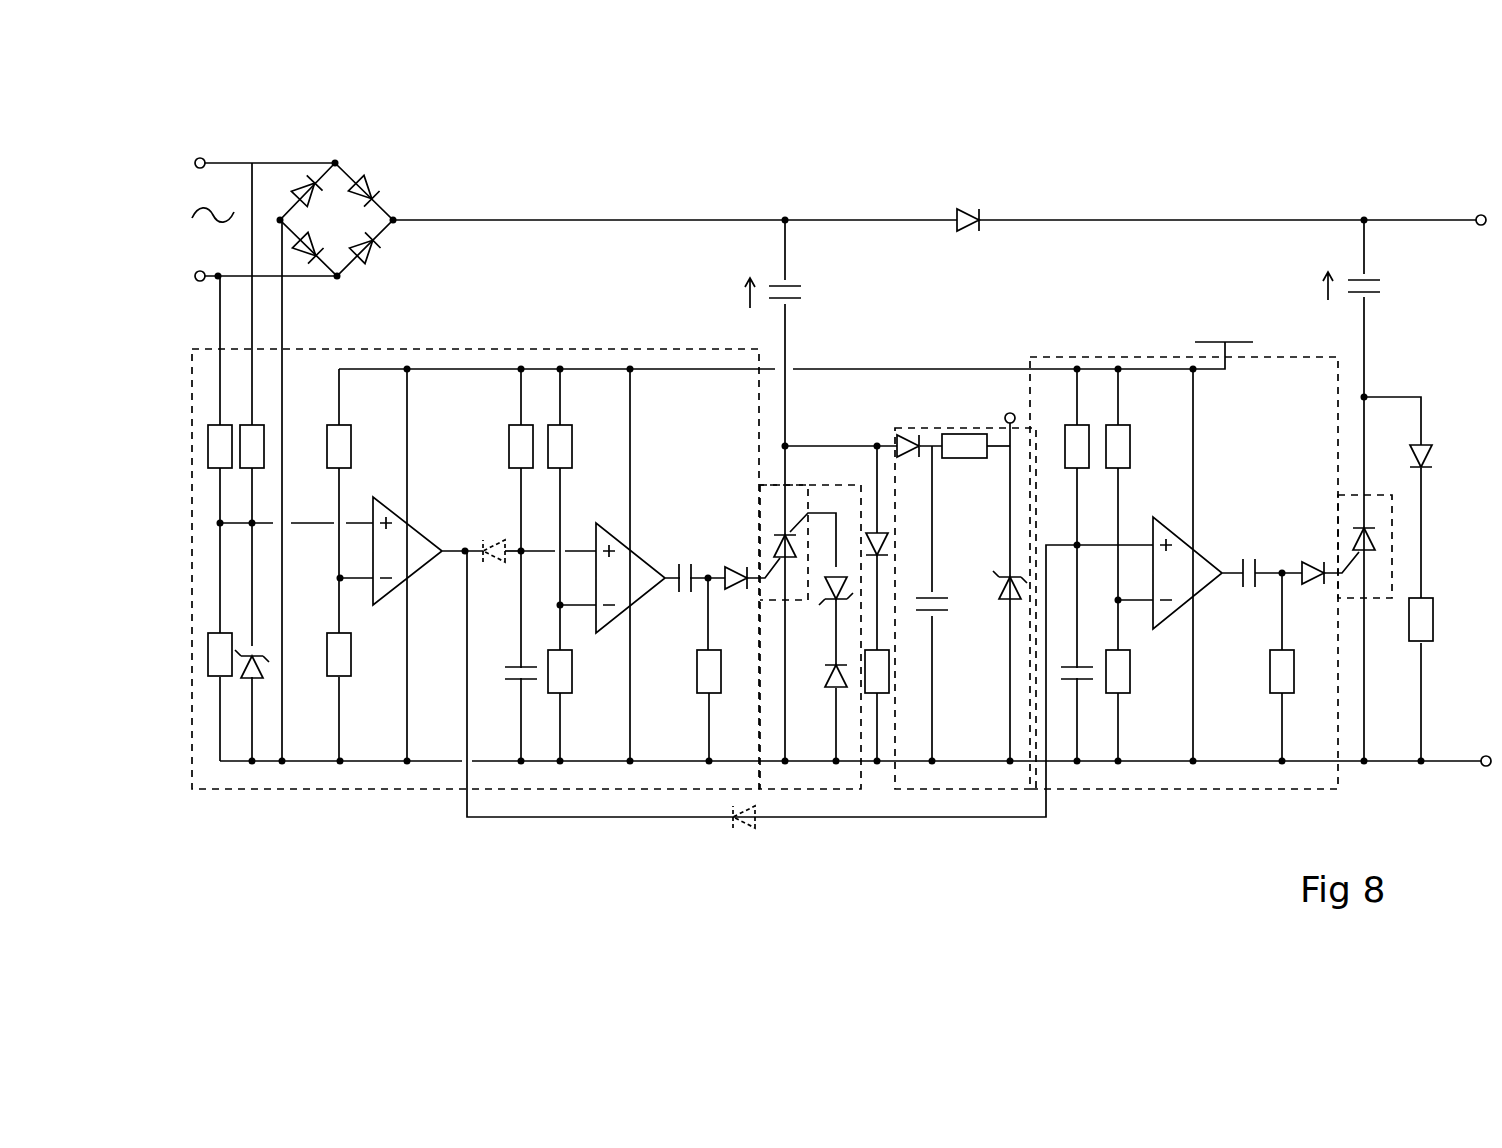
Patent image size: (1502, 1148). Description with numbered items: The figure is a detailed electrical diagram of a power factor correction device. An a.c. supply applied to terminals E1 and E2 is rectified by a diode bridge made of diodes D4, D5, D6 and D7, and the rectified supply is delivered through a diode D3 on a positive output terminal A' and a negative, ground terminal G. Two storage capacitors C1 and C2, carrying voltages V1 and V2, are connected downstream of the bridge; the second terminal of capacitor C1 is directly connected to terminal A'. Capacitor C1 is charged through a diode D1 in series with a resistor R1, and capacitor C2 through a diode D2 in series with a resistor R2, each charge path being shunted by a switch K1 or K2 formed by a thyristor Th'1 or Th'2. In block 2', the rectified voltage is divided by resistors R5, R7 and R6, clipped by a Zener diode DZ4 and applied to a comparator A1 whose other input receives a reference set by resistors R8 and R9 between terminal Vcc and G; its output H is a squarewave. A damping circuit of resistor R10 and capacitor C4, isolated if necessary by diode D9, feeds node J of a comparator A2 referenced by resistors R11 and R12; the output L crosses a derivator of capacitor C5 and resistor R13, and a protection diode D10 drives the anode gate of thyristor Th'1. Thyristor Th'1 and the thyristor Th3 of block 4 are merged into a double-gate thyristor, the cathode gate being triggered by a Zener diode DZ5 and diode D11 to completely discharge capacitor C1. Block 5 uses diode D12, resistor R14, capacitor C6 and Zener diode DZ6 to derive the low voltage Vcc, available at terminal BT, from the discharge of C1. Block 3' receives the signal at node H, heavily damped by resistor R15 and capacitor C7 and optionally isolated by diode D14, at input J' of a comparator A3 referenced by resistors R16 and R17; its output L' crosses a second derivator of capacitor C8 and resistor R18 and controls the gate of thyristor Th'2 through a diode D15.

The a.c. supply terminal E1 is at (172, 164).
The a.c. supply terminal E2 is at (172, 276).
The bridge diode D4 is at (289, 190).
The bridge diode D5 is at (376, 186).
The bridge diode D6 is at (317, 242).
The bridge diode D7 is at (366, 261).
The diode D3 is at (965, 205).
The positive output terminal A' is at (1478, 195).
The negative output terminal G is at (1480, 740).
The storage capacitor C1 is at (808, 297).
The voltage across capacitor C1 V1 is at (730, 294).
The storage capacitor C2 is at (1381, 288).
The voltage across capacitor C2 V2 is at (1311, 286).
The positive low d.c. supply voltage terminal Vcc is at (1213, 326).
The low voltage terminal BT is at (1004, 418).
The control block 2' is at (475, 538).
The supply-maintaining block 4 is at (843, 790).
The filtering block 5 is at (973, 790).
The control block 3' is at (1184, 606).
The switch K1 is at (790, 487).
The switch K2 is at (1385, 600).
The divider bridge resistor R5 is at (207, 454).
The divider bridge resistor R6 is at (201, 697).
The divider bridge resistor R7 is at (264, 462).
The Zener diode DZ4 is at (268, 672).
The divider bridge resistor R8 is at (355, 501).
The divider bridge resistor R9 is at (354, 697).
The first comparator A1 is at (418, 532).
The output node of comparator A1 H is at (450, 556).
The isolating diode D9 is at (504, 543).
The first input node of comparator A2 J is at (498, 583).
The damping resistor R10 is at (529, 518).
The damping capacitor C4 is at (509, 701).
The divider bridge resistor R11 is at (581, 509).
The divider bridge resistor R12 is at (584, 705).
The second comparator A2 is at (640, 565).
The output node of comparator A2 L is at (656, 615).
The derivator capacitor C5 is at (698, 564).
The protection diode D10 is at (744, 604).
The derivator resistor R13 is at (684, 705).
The thyristor Th'1 is at (764, 529).
The thyristor Th3 is at (764, 529).
The triggering Zener diode DZ5 is at (835, 599).
The diode D11 is at (822, 713).
The charge path diode D1 is at (867, 548).
The charge path resistor R1 is at (895, 705).
The diode D12 is at (863, 433).
The resistor R14 is at (974, 462).
The filtering capacitor C6 is at (939, 588).
The Zener diode DZ6 is at (994, 596).
The isolation diode D14 is at (747, 830).
The damping resistor R15 is at (1060, 518).
The damping capacitor C7 is at (1070, 701).
The divider bridge resistor R16 is at (1135, 509).
The divider bridge resistor R17 is at (1141, 705).
The first input node of comparator A3 J' is at (1060, 583).
The third comparator A3 is at (1205, 555).
The output node of comparator A3 L' is at (1229, 617).
The derivator capacitor C8 is at (1269, 591).
The derivator resistor R18 is at (1255, 705).
The diode D15 is at (1324, 584).
The thyristor Th'2 is at (1329, 515).
The charge path diode D2 is at (1438, 455).
The charge path resistor R2 is at (1437, 619).